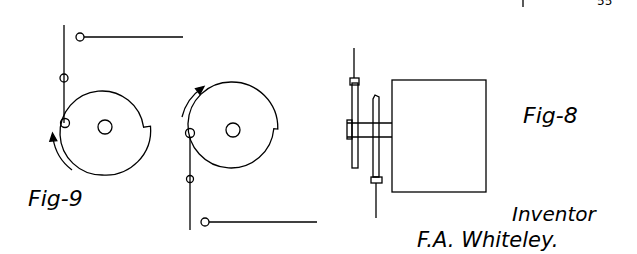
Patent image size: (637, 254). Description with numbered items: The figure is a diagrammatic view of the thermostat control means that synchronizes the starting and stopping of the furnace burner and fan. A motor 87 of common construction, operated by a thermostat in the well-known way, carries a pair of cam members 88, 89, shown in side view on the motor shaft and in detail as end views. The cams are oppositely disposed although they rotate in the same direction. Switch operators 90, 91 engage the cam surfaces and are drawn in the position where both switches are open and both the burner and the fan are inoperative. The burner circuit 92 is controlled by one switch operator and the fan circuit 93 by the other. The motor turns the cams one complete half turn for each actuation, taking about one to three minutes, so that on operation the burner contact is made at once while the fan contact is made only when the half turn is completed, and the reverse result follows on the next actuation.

In FIG. 8, the motor 87 is at (478, 90).
In FIG. 9, the cam member 88 is at (258, 101).
In FIG. 8, the cam member 88 is at (375, 95).
In FIG. 9, the cam member 89 is at (125, 107).
In FIG. 8, the cam member 89 is at (352, 103).
In FIG. 9, the switch operator 90 is at (192, 191).
In FIG. 9, the switch operator 91 is at (64, 103).
In FIG. 9, the burner circuit 92 is at (146, 36).
In FIG. 9, the fan circuit 93 is at (248, 225).